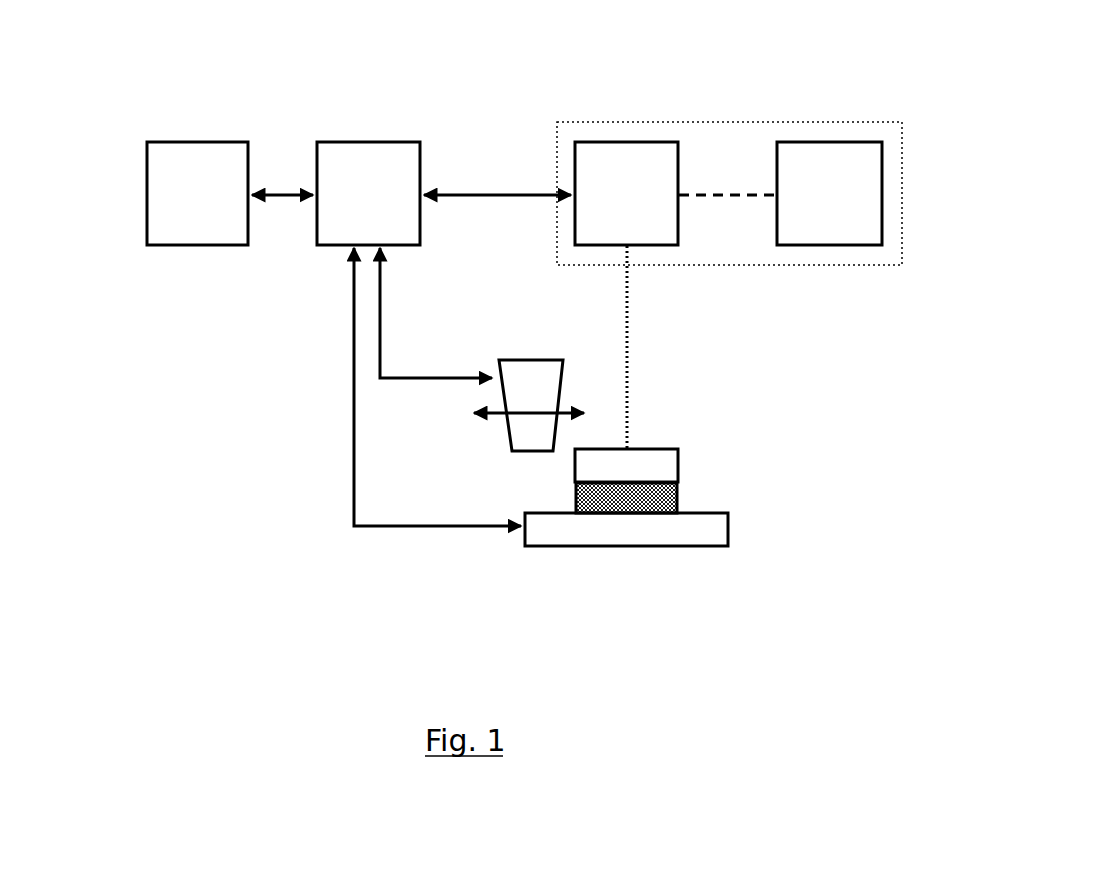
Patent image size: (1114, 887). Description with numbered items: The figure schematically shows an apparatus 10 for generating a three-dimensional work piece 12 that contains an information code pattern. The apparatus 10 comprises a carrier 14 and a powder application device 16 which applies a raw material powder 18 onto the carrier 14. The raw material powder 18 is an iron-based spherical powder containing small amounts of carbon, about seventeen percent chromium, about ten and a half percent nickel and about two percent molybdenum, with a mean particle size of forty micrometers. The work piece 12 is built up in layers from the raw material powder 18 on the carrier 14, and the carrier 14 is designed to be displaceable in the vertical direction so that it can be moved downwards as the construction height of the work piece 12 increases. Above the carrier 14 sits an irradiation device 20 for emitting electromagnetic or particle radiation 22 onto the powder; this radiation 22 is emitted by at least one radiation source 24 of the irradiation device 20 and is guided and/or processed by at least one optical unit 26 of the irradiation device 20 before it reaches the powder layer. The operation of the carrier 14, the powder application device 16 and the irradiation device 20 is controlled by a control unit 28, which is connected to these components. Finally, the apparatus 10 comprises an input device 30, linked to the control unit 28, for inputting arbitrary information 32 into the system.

The apparatus 10 is at (985, 211).
The three-dimensional work piece 12 is at (550, 477).
The carrier 14 is at (694, 530).
The powder application device 16 is at (523, 375).
The raw material powder 18 is at (665, 472).
The irradiation device 20 is at (732, 120).
The electromagnetic or particle radiation 22 is at (629, 342).
The radiation source 24 is at (810, 213).
The optical unit 26 is at (607, 213).
The control unit 28 is at (349, 213).
The input device 30 is at (178, 213).
The arbitrary information 32 is at (276, 186).